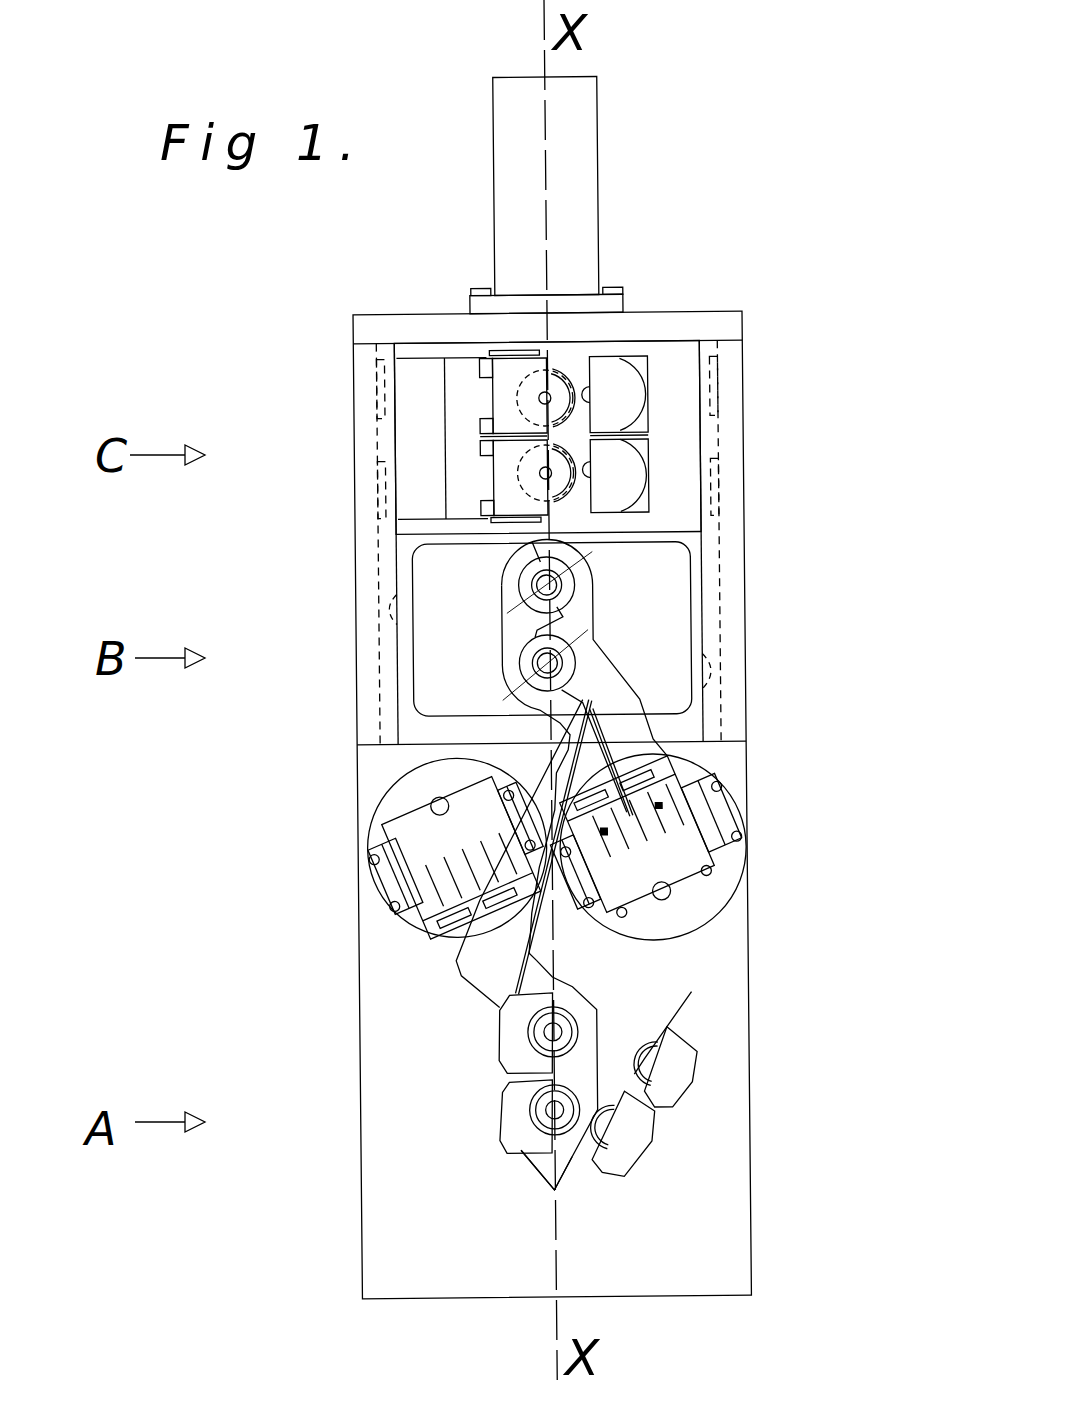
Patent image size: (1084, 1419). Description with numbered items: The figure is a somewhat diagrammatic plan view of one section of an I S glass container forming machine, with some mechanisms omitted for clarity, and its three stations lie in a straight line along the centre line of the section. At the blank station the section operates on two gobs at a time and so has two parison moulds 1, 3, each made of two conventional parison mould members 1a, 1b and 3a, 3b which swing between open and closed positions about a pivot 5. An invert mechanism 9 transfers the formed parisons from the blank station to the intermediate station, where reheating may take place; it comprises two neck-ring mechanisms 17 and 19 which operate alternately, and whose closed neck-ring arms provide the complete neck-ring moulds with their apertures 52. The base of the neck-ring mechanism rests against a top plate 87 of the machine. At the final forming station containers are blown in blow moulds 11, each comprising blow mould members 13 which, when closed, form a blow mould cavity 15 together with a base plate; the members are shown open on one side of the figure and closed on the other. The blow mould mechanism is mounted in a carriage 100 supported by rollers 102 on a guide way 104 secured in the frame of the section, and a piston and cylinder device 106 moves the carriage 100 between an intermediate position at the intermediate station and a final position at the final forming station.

The parison mould 1 is at (596, 1126).
The parison mould member 1a is at (513, 1112).
The parison mould member 1b is at (637, 1145).
The parison mould 3 is at (771, 1037).
The parison mould member 3a is at (515, 1043).
The parison mould member 3b is at (672, 1095).
The pivot 5 is at (557, 1193).
The invert mechanism 9 is at (795, 840).
The blow mould 11 is at (613, 405).
The blow mould member 13 is at (815, 510).
The blow mould cavity 15 is at (553, 397).
The neck-ring mechanism 17 is at (418, 918).
The neck-ring mechanism 19 is at (705, 905).
The aperture 52 is at (573, 650).
The top plate 87 is at (740, 1240).
The carriage 100 is at (420, 393).
The rollers 102 is at (710, 370).
The guide way 104 is at (393, 600).
The piston and cylinder device 106 is at (553, 170).